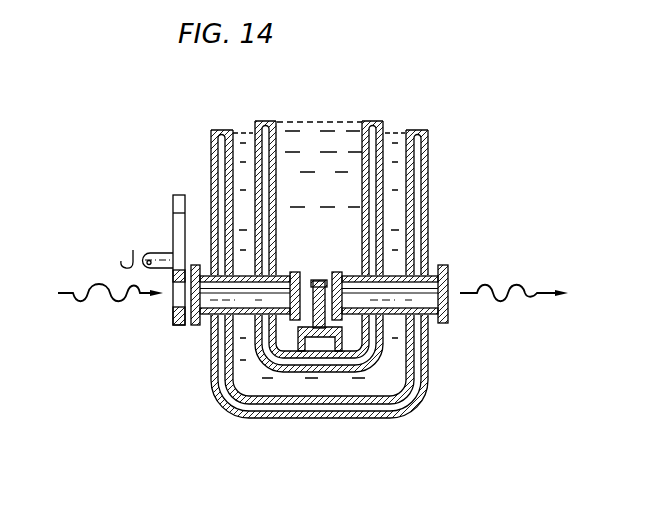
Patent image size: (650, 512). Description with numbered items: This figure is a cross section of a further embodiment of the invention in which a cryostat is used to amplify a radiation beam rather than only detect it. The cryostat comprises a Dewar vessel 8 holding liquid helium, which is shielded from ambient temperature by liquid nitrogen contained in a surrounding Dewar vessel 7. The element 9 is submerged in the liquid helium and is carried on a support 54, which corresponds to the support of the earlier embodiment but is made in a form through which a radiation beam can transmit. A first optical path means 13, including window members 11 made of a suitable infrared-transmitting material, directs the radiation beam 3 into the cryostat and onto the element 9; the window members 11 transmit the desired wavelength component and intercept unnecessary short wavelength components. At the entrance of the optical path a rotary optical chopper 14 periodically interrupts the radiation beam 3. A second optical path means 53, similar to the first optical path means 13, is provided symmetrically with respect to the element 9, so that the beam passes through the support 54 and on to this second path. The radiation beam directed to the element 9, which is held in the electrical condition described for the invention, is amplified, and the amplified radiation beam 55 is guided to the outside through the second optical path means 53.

The radiation beam 3 is at (73, 292).
The Dewar vessel 7 is at (426, 168).
The Dewar vessel 8 is at (373, 120).
The element 9 is at (316, 281).
The window members 11 is at (195, 267).
The first optical path means 13 is at (243, 300).
The rotary optical chopper 14 is at (158, 250).
The second optical path means 53 is at (395, 300).
The support 54 is at (334, 273).
The amplified radiation beam 55 is at (530, 291).